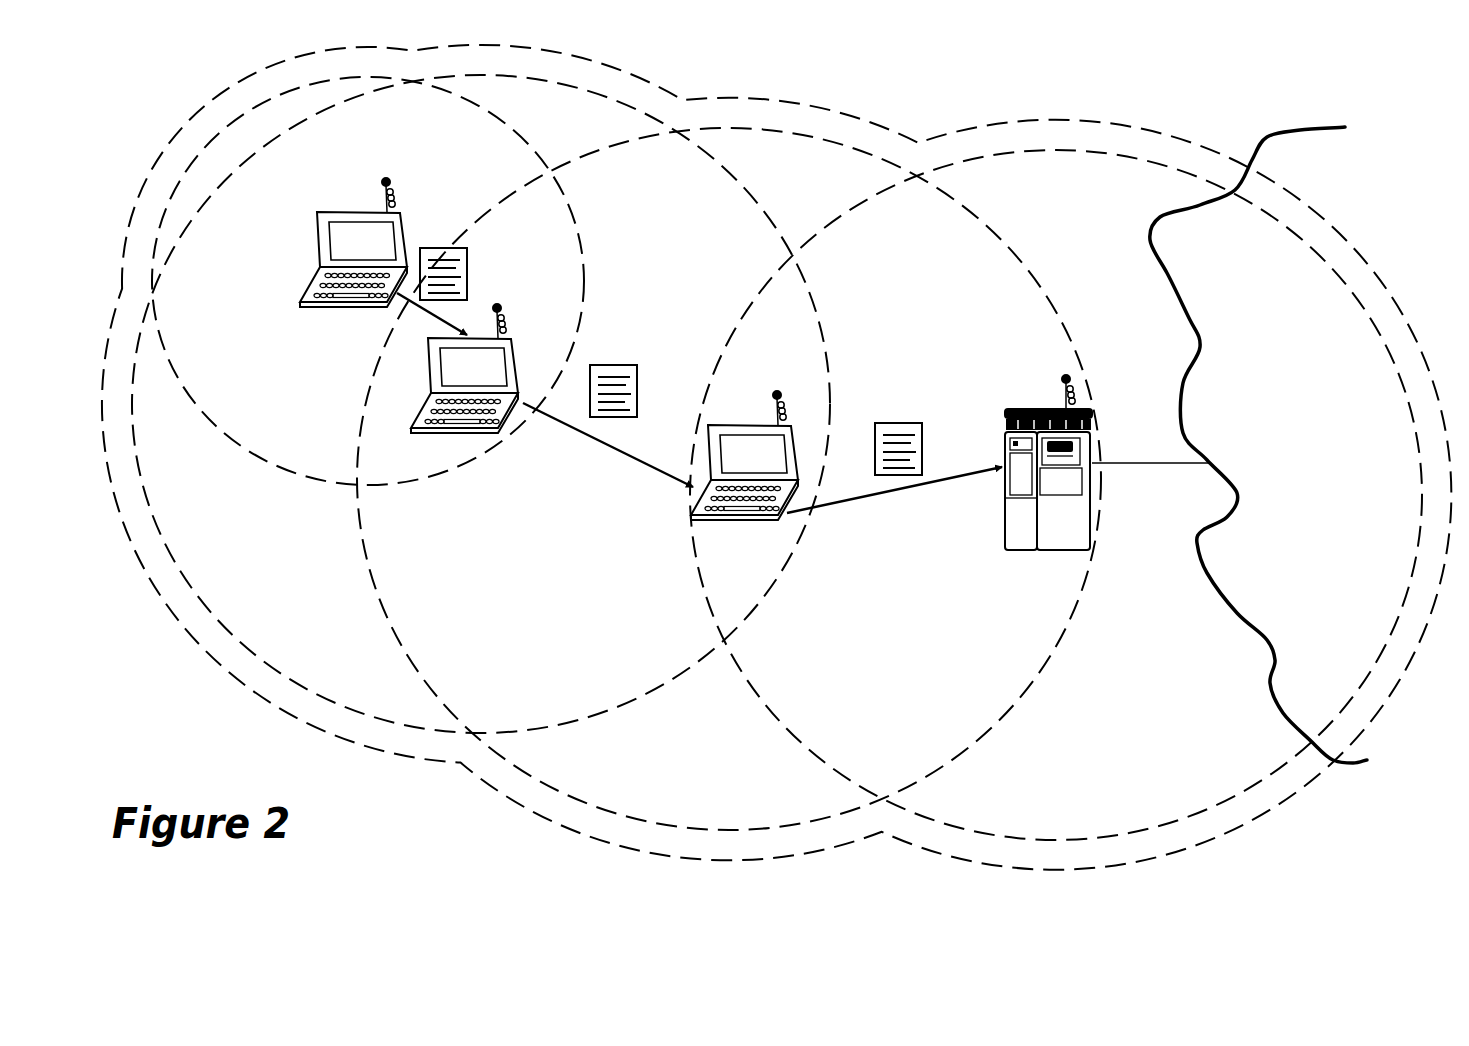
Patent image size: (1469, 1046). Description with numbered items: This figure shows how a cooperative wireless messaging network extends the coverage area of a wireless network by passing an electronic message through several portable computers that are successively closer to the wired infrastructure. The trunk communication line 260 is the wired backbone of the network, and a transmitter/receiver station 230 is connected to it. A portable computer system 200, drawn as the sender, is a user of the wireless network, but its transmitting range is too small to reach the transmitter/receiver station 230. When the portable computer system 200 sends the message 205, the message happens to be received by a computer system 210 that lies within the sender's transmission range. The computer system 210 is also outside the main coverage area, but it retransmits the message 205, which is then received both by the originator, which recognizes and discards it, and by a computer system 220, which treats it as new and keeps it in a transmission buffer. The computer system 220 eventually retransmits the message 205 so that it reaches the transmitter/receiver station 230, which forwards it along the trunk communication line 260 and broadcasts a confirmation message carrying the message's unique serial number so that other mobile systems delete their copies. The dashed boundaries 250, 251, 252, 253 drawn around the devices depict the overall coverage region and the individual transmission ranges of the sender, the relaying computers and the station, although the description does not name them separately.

The portable computer system 200 is at (312, 245).
The message 205 is at (478, 270).
The computer system 210 is at (518, 353).
The computer system 220 is at (800, 440).
The transmitter/receiver station 230 is at (1000, 528).
The network boundary 250 is at (877, 122).
The transmission range of sender 251 is at (458, 92).
The transmission range of intermediate computer 252 is at (238, 635).
The transmission range of server 253 is at (1372, 327).
The trunk communication line 260 is at (1178, 272).